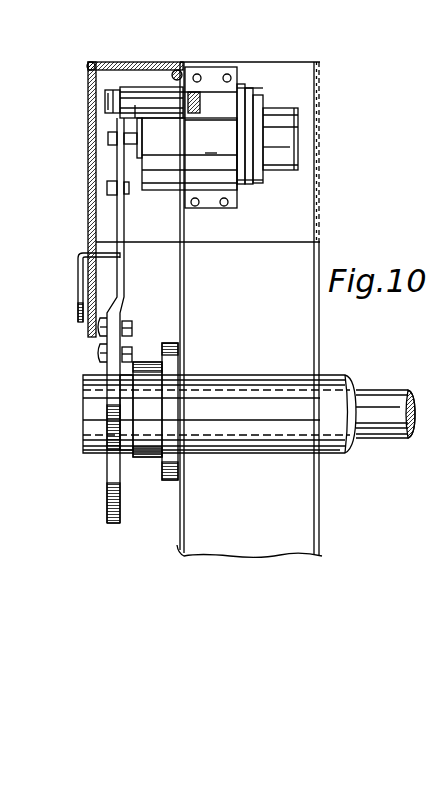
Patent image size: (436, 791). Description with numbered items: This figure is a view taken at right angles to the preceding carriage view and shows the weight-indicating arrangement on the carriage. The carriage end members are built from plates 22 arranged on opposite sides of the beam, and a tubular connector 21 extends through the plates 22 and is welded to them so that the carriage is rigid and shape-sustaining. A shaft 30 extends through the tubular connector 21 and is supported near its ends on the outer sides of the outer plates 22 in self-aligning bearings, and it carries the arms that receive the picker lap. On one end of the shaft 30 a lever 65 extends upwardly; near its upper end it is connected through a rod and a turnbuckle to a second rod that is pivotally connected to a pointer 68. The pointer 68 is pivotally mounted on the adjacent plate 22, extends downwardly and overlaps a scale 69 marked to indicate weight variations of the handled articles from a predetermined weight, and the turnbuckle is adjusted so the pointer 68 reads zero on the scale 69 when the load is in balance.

The tubular connector 21 is at (338, 378).
The plates 22 is at (178, 223).
The shaft 30 is at (368, 407).
The lever 65 is at (120, 285).
The pointer 68 is at (84, 252).
The scale 69 is at (88, 333).